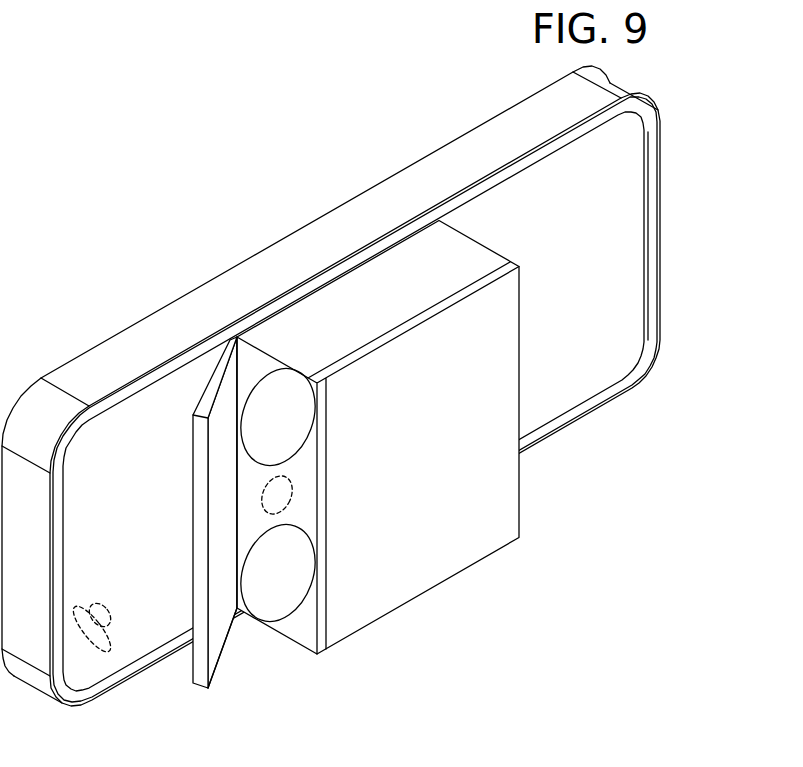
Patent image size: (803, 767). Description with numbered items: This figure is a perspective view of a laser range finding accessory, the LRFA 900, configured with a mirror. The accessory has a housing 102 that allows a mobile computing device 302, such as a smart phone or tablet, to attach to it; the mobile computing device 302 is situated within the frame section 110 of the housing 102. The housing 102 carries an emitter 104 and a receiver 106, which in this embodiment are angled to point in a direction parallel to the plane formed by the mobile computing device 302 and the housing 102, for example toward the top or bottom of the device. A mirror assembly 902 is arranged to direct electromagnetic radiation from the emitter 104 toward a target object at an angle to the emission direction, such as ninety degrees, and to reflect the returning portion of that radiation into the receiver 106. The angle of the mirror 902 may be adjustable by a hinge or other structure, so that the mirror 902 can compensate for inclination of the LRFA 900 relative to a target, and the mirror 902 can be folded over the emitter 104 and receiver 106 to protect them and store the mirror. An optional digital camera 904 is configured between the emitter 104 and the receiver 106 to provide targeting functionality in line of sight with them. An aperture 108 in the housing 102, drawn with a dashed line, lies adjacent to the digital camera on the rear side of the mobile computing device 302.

The LRFA 900 is at (265, 163).
The frame section 110 is at (473, 153).
The mobile computing device 302 is at (630, 268).
The housing 102 is at (505, 487).
The emitter 104 is at (298, 410).
The receiver 106 is at (287, 607).
The digital camera 904 is at (288, 487).
The aperture 108 is at (90, 607).
The mirror assembly 902 is at (215, 640).